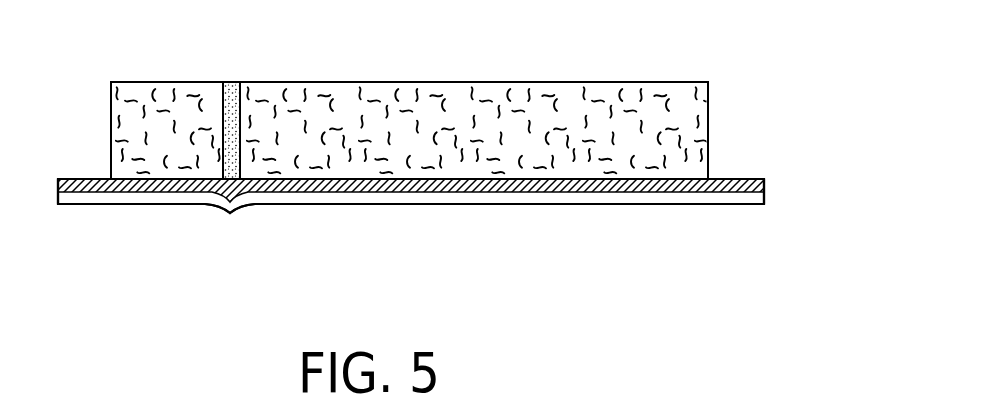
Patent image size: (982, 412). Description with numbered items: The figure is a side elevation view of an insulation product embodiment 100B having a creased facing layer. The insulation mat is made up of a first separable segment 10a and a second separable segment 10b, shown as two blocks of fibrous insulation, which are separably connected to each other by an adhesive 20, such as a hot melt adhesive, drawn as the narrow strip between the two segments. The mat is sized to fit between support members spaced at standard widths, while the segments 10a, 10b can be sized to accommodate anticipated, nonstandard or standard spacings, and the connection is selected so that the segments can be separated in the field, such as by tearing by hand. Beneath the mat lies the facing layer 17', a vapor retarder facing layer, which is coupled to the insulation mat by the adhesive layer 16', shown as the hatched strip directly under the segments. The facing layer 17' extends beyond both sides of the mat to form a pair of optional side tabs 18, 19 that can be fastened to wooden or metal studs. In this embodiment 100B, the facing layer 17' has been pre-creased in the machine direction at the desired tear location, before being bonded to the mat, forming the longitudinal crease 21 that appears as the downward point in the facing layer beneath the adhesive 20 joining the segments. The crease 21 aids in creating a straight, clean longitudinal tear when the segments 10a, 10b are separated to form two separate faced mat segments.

The embodiment 100B is at (846, 123).
The first separable segment 10a is at (435, 83).
The second separable segment 10b is at (157, 95).
The adhesive 20 is at (231, 82).
The adhesive layer 16' is at (411, 218).
The facing layer 17' is at (411, 218).
The side tab 18 is at (67, 198).
The side tab 19 is at (737, 207).
The longitudinal crease 21 is at (230, 215).